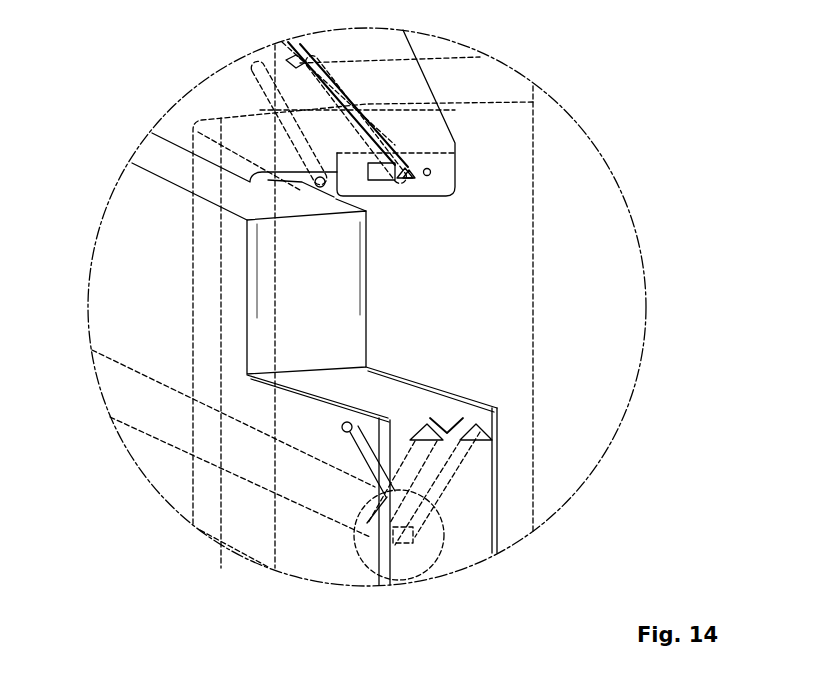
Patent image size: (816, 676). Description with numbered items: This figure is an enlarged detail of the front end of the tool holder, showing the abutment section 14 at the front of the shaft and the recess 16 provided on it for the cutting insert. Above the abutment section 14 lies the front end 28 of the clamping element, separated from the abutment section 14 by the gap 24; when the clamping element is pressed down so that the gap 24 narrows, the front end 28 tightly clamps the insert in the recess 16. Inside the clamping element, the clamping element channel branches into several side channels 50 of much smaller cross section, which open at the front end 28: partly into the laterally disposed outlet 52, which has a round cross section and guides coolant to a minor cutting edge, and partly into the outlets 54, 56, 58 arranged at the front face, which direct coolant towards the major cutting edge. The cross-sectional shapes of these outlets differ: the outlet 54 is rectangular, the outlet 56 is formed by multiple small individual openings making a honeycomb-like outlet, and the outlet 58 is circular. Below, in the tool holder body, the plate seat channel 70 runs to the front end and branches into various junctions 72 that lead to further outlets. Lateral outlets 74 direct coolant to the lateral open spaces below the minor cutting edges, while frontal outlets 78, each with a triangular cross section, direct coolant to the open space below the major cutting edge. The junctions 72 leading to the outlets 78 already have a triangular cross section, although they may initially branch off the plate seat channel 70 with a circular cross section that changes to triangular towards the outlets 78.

The abutment section 14 is at (463, 543).
The recess 16 is at (374, 385).
The gap 24 is at (155, 153).
The front end of the clamping element 28 is at (432, 128).
The side channels 50 is at (322, 112).
The laterally disposed outlet 52 is at (305, 183).
The outlet 54 is at (390, 178).
The outlet 56 is at (408, 172).
The outlet 58 is at (432, 172).
The plate seat channel 70 is at (107, 388).
The junctions 72 is at (377, 445).
The lateral outlets 74 is at (347, 430).
The frontal outlets 78 is at (420, 425).